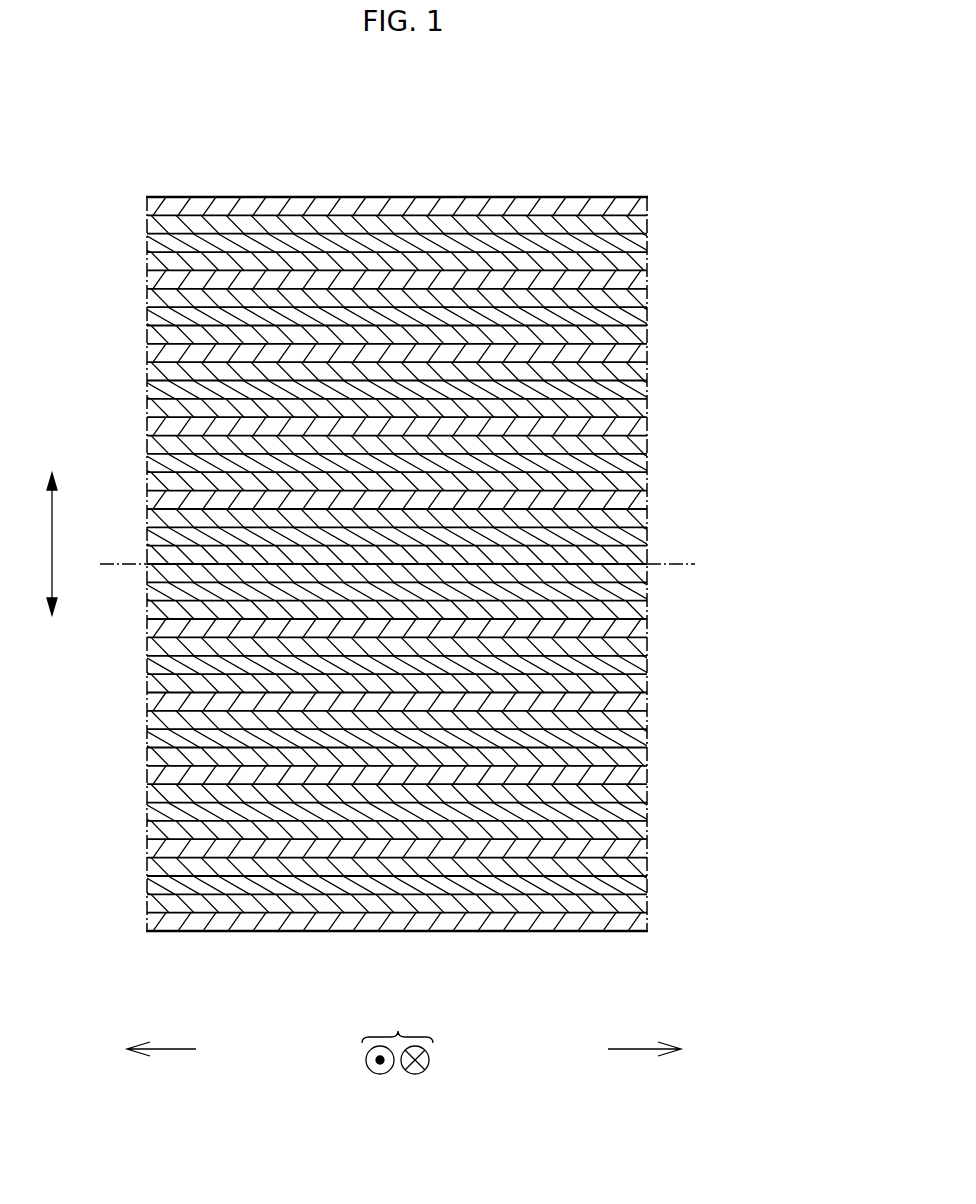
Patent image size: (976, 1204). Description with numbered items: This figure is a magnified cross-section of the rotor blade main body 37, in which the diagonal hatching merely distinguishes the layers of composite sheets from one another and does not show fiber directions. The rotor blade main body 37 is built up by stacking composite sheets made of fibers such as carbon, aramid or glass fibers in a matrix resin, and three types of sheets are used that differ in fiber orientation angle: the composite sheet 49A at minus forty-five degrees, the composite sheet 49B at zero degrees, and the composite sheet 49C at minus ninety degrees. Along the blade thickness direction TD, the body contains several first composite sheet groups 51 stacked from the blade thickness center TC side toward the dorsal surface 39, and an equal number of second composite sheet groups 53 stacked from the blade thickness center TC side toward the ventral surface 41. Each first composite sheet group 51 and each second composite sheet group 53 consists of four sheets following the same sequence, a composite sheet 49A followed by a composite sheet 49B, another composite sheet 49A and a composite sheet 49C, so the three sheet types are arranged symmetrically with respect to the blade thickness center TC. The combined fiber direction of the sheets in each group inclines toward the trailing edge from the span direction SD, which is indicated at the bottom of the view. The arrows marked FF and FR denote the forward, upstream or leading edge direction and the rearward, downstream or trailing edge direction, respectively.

The rotor blade main body 37 is at (420, 152).
The dorsal surface 39 is at (460, 197).
The ventral surface 41 is at (493, 932).
The composite sheet 49A is at (152, 298).
The composite sheet 49B is at (152, 316).
The composite sheet 49C is at (152, 280).
The first composite sheet group 51 is at (648, 199).
The second composite sheet group 53 is at (648, 566).
The blade thickness center TC is at (688, 562).
The blade thickness direction TD is at (36, 544).
The span direction SD is at (397, 1039).
The forward direction FF is at (144, 1051).
The rearward direction FR is at (661, 1051).